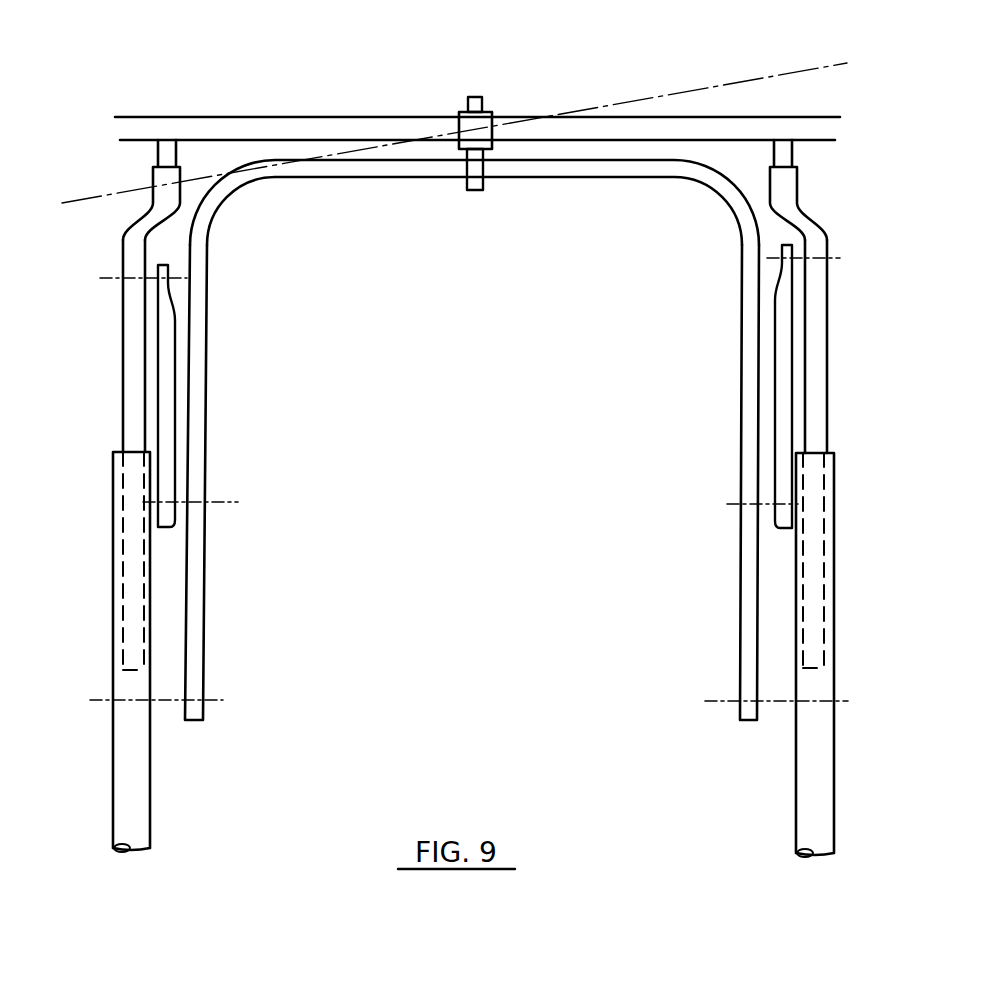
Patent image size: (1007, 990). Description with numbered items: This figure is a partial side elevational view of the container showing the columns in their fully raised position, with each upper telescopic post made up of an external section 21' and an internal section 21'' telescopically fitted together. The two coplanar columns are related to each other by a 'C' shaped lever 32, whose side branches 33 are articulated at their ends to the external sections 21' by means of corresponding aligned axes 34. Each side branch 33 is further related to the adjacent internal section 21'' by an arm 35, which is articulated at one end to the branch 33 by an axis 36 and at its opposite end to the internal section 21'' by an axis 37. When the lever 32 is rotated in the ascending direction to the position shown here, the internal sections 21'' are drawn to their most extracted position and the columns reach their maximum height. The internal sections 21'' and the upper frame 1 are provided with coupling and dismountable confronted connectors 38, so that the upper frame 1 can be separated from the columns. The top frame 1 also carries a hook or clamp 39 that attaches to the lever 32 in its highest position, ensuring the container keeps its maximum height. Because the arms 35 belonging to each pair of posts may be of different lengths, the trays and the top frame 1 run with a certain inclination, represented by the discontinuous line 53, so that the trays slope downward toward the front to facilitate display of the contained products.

The upper frame 1 is at (347, 133).
The hook or clamp 39 is at (478, 102).
The discontinuous line 53 is at (715, 87).
The coupling and dismountable confronted connectors 38 is at (165, 175).
The internal section 21'' is at (496, 455).
The axis 37 is at (108, 280).
The 'C' shaped lever 32 is at (573, 170).
The side branches 33 is at (196, 600).
The arm 35 is at (165, 397).
The axis 36 is at (222, 502).
The aligned axes 34 is at (217, 700).
The external section 21' is at (473, 654).